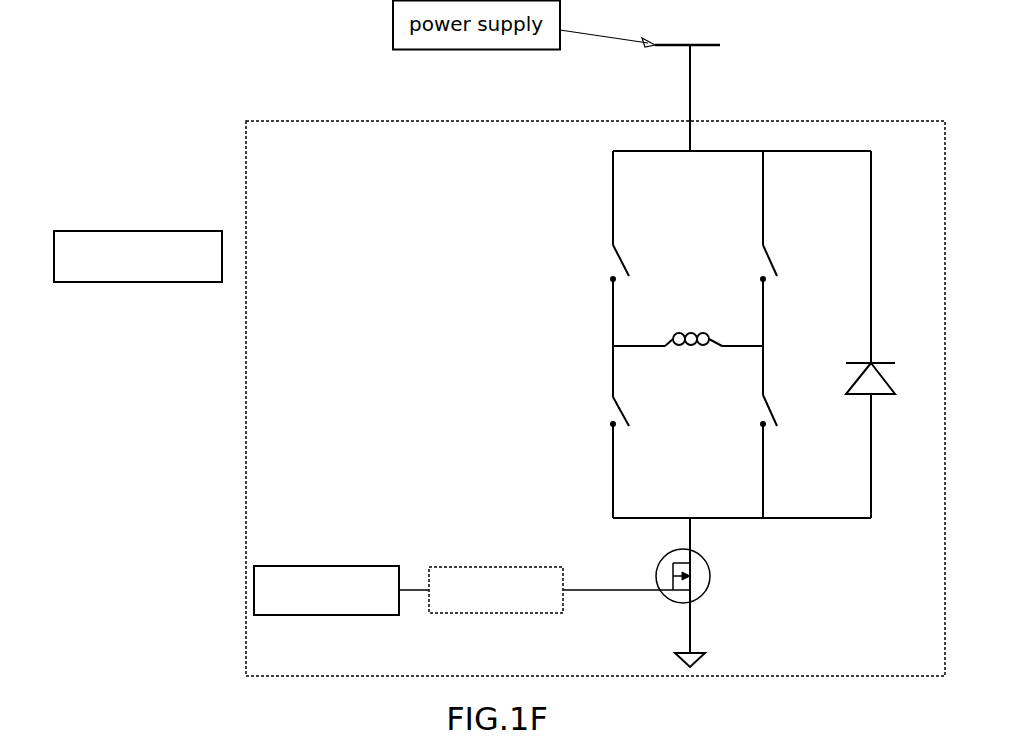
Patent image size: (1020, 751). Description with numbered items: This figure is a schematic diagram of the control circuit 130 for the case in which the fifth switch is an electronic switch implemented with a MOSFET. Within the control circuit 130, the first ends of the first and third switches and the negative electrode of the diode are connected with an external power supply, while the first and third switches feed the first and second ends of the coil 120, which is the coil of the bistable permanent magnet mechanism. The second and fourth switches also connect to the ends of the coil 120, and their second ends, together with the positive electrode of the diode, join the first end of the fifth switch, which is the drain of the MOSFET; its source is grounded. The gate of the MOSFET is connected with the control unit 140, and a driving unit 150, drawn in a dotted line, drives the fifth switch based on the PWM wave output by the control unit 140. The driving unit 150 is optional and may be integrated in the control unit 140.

The coil 120 is at (676, 333).
The control circuit 130 is at (595, 381).
The control unit 140 is at (326, 578).
The driving unit 150 is at (496, 577).